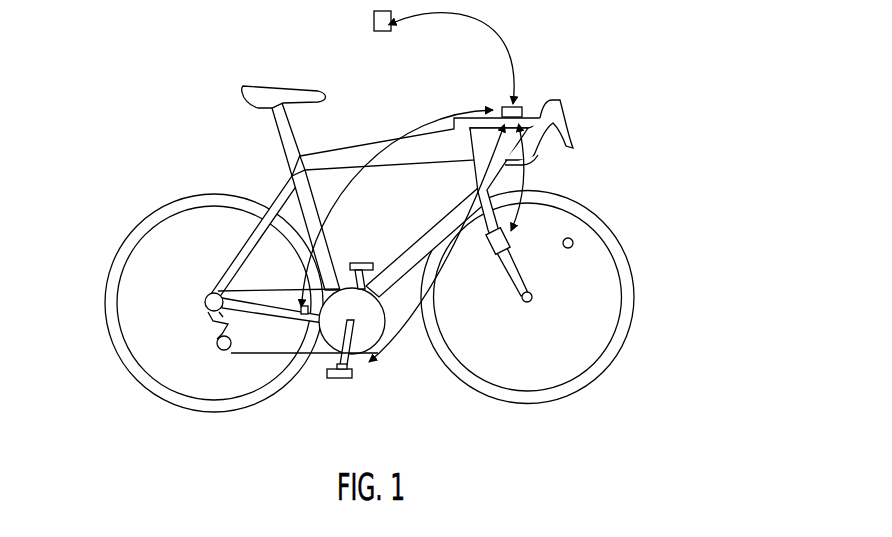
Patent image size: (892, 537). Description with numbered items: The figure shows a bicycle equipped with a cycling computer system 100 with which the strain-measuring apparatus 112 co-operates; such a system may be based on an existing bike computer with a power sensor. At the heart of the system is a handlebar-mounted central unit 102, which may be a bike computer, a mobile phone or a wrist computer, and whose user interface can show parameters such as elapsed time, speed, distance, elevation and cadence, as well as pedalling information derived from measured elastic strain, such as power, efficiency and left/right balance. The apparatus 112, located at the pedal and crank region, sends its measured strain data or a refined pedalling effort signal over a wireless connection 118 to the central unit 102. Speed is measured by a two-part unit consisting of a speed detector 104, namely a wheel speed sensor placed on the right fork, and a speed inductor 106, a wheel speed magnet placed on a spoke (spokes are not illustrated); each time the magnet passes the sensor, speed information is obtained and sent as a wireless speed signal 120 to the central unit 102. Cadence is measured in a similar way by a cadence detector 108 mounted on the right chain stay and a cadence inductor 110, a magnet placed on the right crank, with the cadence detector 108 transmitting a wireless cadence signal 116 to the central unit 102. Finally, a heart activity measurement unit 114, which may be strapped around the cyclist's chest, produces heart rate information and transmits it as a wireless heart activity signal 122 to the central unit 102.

The cycling computer system 100 is at (157, 125).
The central unit 102 is at (530, 106).
The speed detector 104 is at (488, 246).
The speed inductor 106 is at (569, 248).
The cadence detector 108 is at (300, 315).
The cadence inductor 110 is at (330, 364).
The apparatus 112 is at (352, 372).
The heart activity measurement unit 114 is at (373, 22).
The wireless cadence signal 116 is at (402, 129).
The wireless connection 118 is at (439, 277).
The wireless speed signal 120 is at (526, 172).
The wireless heart activity signal 122 is at (485, 20).